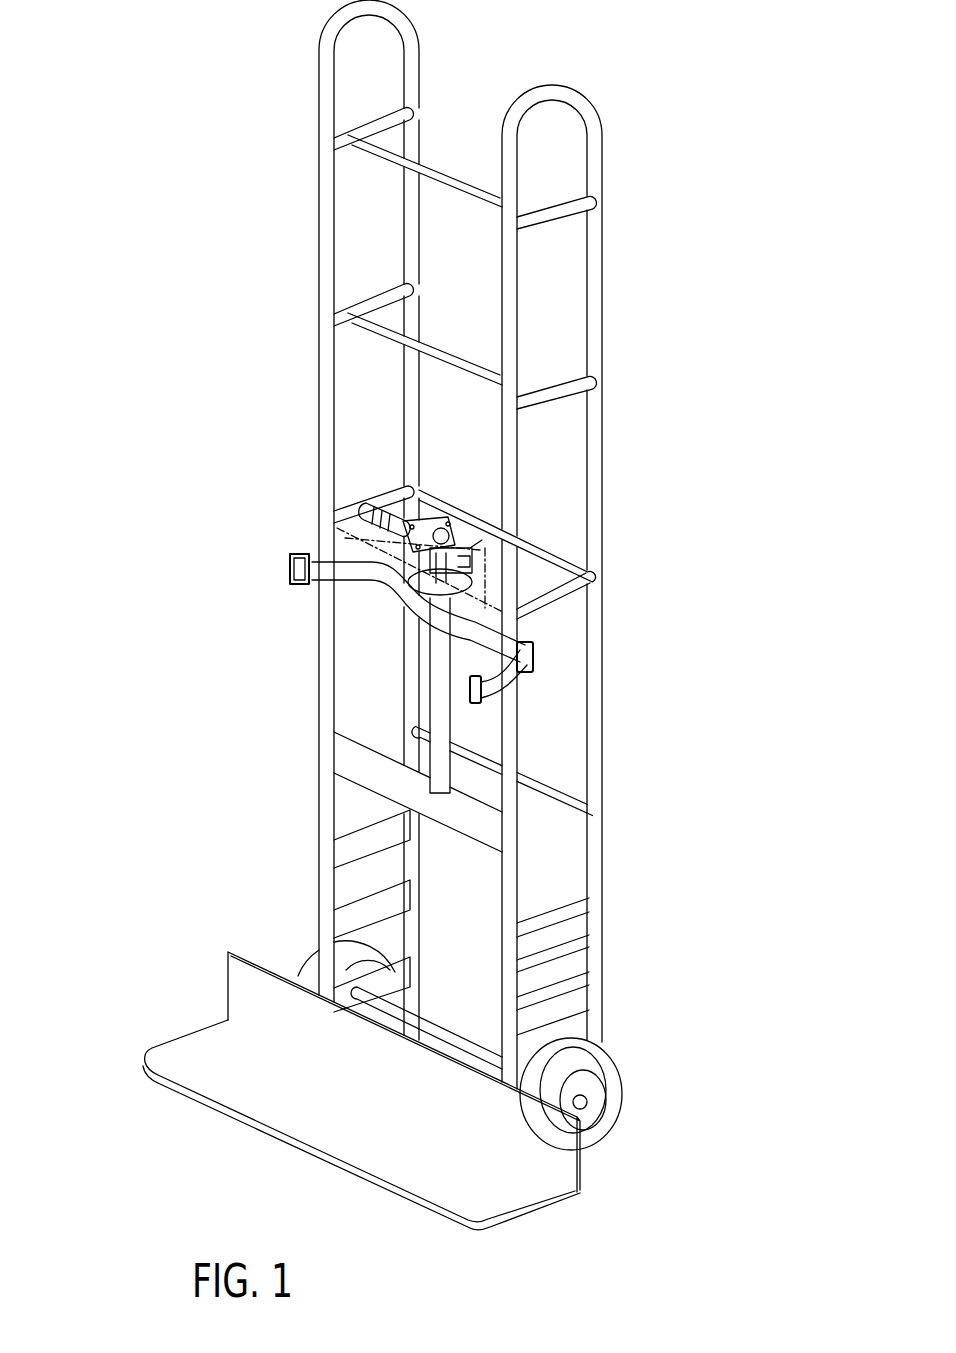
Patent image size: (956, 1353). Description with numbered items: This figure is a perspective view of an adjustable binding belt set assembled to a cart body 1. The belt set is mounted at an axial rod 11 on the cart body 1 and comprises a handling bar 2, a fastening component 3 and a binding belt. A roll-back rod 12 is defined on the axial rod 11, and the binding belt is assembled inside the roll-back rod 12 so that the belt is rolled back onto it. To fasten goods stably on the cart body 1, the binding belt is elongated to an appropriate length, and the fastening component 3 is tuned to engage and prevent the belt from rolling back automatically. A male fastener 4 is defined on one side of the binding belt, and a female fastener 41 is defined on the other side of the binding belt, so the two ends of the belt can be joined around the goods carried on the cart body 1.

The cart body 1 is at (172, 840).
The handling bar 2 is at (445, 522).
The fastening component 3 is at (483, 560).
The axial rod 11 is at (467, 585).
The roll-back rod 12 is at (400, 622).
The male fastener 4 is at (302, 581).
The female fastener 41 is at (470, 705).